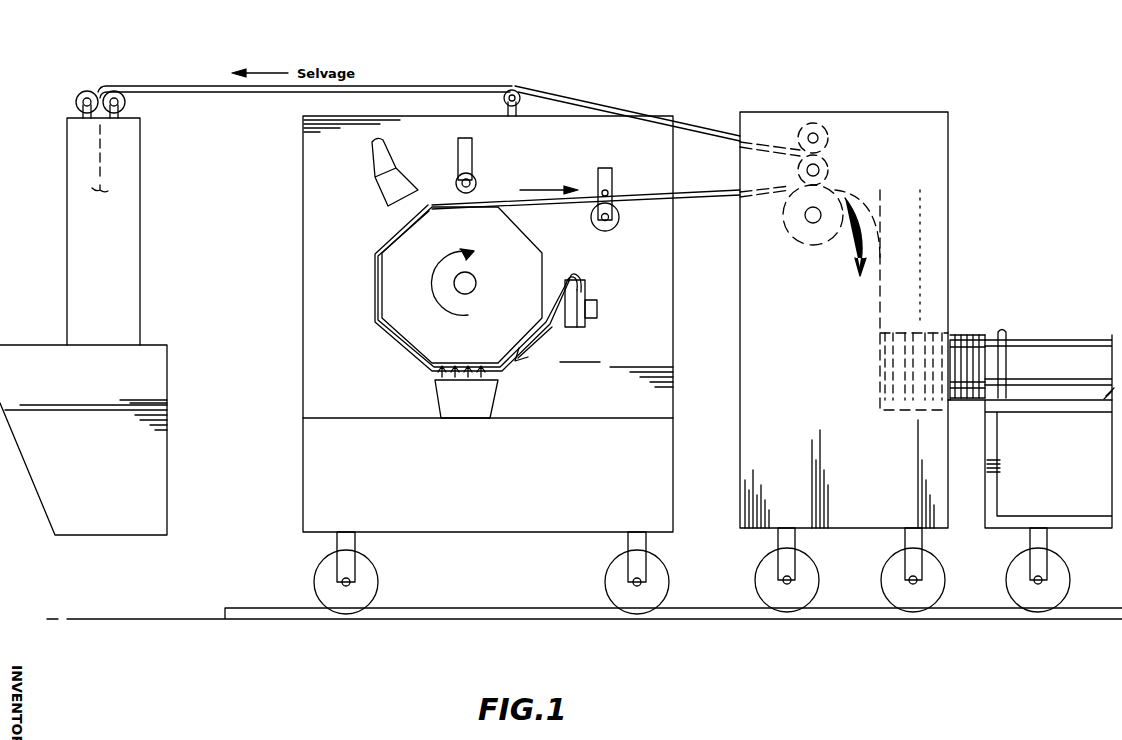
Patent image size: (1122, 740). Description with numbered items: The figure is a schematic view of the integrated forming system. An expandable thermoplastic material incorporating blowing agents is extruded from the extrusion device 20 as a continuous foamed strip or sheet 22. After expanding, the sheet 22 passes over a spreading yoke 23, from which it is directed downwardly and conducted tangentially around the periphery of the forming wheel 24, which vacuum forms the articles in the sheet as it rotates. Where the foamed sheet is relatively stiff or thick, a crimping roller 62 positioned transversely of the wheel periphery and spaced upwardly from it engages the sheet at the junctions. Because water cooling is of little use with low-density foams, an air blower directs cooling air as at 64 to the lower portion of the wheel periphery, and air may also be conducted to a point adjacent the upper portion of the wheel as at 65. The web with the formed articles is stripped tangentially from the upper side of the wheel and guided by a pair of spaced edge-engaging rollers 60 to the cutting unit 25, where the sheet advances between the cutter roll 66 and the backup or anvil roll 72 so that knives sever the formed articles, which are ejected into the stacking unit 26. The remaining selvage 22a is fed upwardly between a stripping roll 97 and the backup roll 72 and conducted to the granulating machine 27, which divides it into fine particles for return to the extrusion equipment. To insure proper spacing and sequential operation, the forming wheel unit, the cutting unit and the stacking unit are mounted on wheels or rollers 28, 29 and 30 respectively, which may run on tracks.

The extrusion device 20 is at (615, 288).
The thermoplastic sheet 22 is at (632, 193).
The selvage 22a is at (600, 108).
The spreading yoke 23 is at (568, 275).
The forming wheel 24 is at (400, 326).
The cutting unit 25 is at (829, 101).
The stacking unit 26 is at (1052, 320).
The granulating machine 27 is at (116, 78).
The wheels or rollers 28 is at (372, 585).
The wheels or rollers 29 is at (815, 582).
The wheels or rollers 30 is at (1065, 582).
The edge-engaging rollers 60 is at (621, 226).
The crimping roller 62 is at (486, 182).
The cooling air 64 is at (496, 398).
The upper cooling air point 65 is at (380, 192).
The cutter roll 66 is at (838, 200).
The backup or anvil roll 72 is at (831, 167).
The stripping roll 97 is at (831, 139).